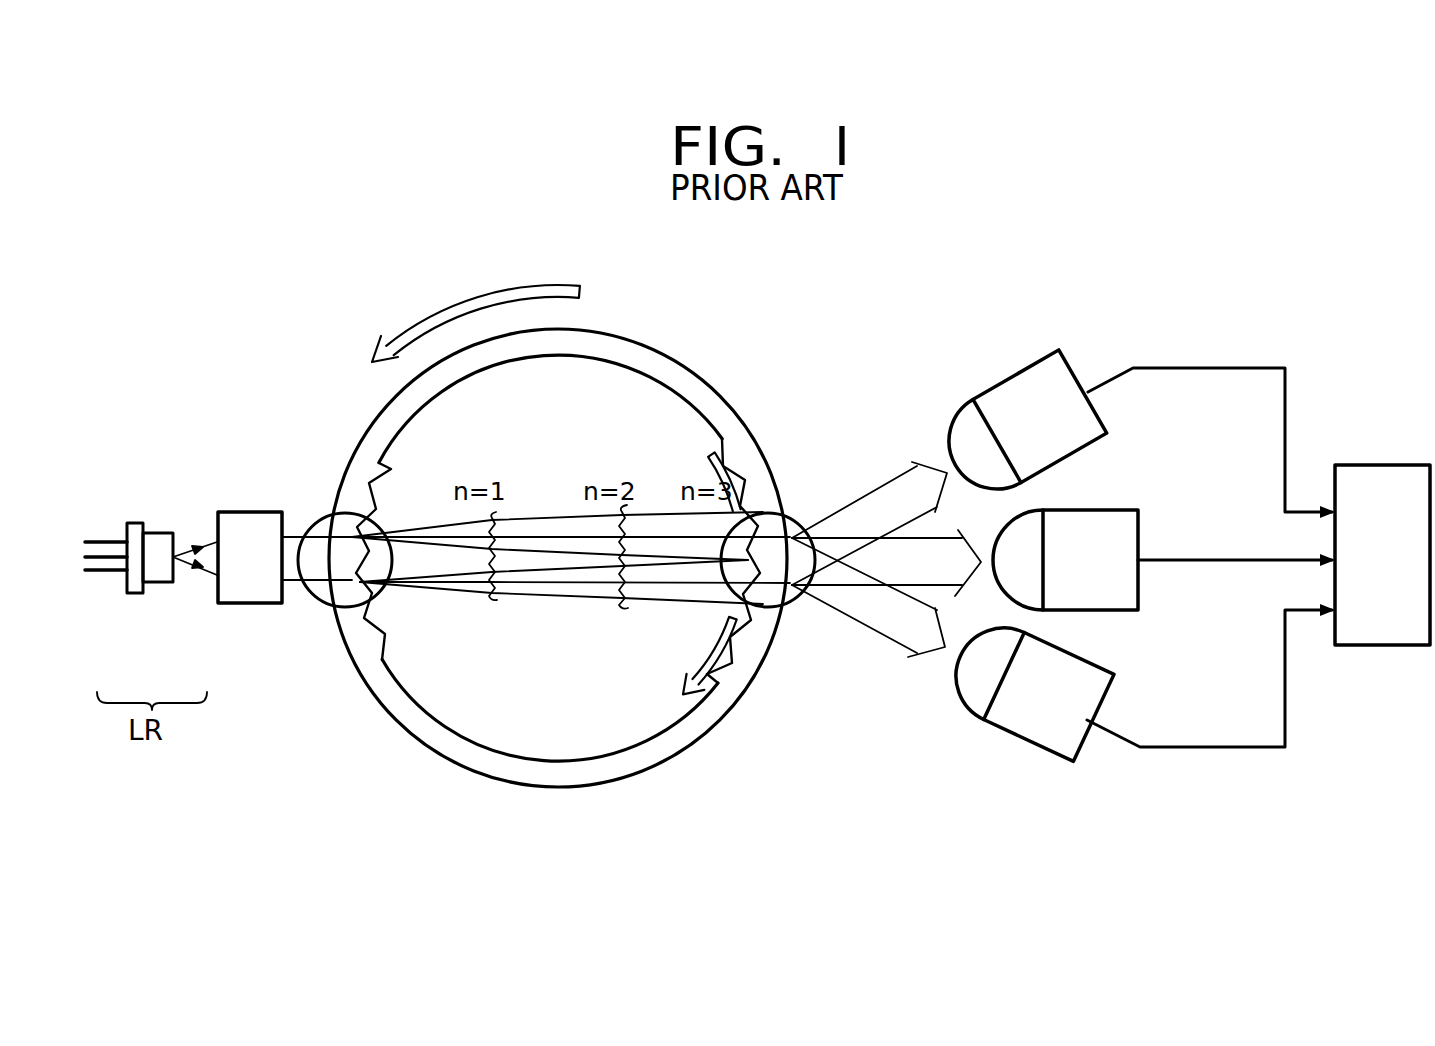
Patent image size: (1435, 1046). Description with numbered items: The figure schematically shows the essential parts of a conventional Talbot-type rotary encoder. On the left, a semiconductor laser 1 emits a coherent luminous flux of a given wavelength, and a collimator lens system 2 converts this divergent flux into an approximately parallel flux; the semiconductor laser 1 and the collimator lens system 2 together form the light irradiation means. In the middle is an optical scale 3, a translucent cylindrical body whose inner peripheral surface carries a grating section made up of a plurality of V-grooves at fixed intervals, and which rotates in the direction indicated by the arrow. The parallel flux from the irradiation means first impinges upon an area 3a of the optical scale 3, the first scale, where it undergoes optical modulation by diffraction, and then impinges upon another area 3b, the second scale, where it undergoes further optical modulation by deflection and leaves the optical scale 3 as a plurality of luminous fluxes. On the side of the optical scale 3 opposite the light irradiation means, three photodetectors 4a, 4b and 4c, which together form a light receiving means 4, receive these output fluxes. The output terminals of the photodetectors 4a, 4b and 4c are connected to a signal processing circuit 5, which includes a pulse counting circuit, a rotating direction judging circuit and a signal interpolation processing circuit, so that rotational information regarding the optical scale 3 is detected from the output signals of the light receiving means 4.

The semiconductor laser 1 is at (160, 590).
The collimator lens system 2 is at (240, 592).
The optical scale 3 is at (657, 367).
The first scale 3a is at (325, 596).
The second scale 3b is at (800, 605).
The light receiving means 4 is at (1040, 272).
The photodetector 4a is at (1025, 392).
The photodetector 4b is at (1070, 727).
The photodetector 4c is at (1122, 526).
The signal processing circuit 5 is at (1383, 640).